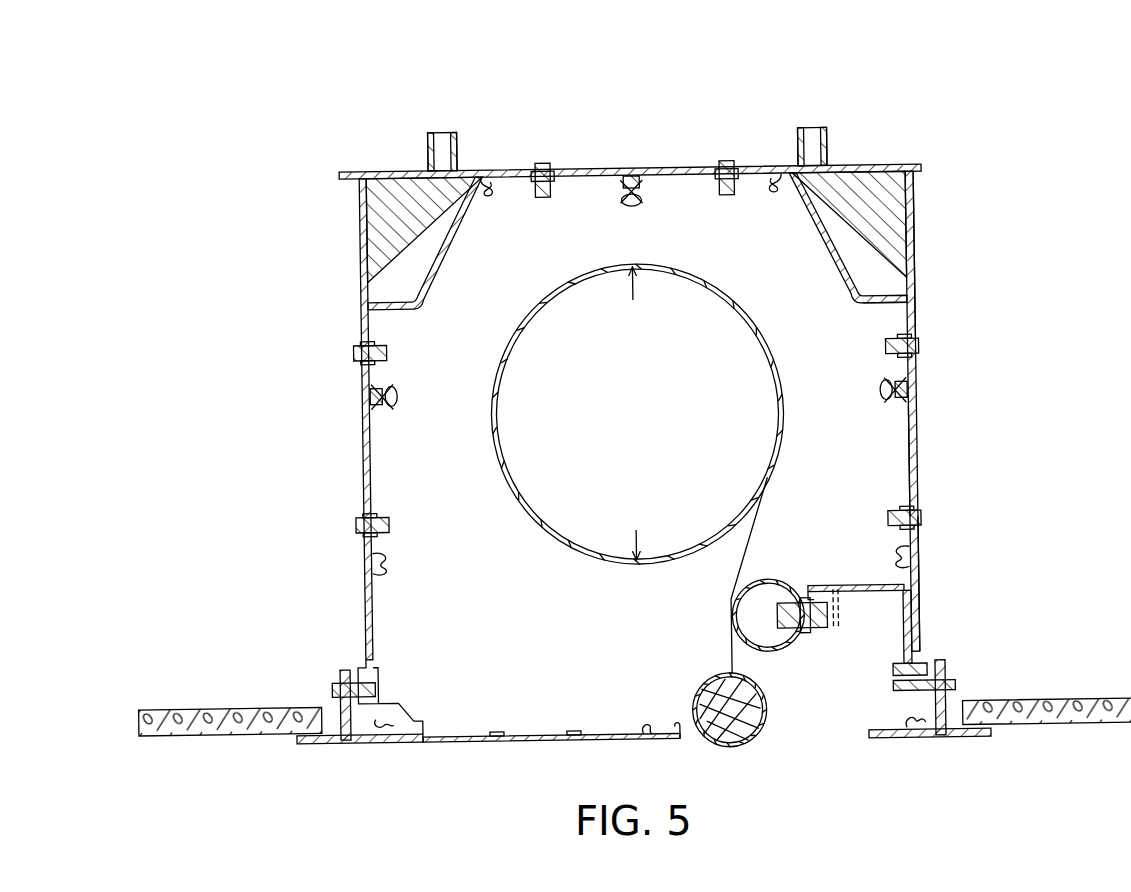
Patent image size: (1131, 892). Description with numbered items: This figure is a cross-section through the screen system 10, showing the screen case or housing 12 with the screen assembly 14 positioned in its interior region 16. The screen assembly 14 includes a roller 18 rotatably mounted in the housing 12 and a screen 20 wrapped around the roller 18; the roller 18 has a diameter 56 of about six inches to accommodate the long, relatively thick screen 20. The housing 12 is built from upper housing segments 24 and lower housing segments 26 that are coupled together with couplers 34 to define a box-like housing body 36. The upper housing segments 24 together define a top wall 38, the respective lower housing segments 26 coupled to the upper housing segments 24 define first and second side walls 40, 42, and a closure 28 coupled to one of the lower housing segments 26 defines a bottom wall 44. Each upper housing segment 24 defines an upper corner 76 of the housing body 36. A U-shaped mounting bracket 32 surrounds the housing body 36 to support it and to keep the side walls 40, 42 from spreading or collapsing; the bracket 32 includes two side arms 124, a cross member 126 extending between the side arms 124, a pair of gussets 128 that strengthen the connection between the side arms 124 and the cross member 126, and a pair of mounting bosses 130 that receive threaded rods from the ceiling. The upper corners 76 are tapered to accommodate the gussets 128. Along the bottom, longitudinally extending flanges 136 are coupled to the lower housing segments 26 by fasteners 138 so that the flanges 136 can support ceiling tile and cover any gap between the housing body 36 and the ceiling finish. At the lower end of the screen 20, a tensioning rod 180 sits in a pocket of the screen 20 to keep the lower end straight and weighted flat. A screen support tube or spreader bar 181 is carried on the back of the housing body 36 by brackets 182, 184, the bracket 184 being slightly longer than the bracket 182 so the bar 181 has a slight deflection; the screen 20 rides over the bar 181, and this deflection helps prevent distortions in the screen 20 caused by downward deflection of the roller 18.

The screen system 10 is at (1043, 125).
The screen case or housing 12 is at (929, 536).
The screen assembly 14 is at (499, 593).
The interior region 16 is at (885, 465).
The roller 18 is at (527, 498).
The screen 20 is at (751, 542).
The upper housing segment 24 is at (829, 260).
The lower housing segment 26 is at (378, 467).
The closure 28 is at (511, 733).
The U-shaped mounting bracket 32 is at (923, 241).
The coupler 34 is at (632, 175).
The housing body 36 is at (906, 286).
The top wall 38 is at (578, 179).
The first side wall 40 is at (371, 594).
The second side wall 42 is at (918, 476).
The bottom wall 44 is at (596, 734).
The diameter 56 is at (637, 413).
The corner 76 is at (834, 237).
The side arm 124 is at (364, 452).
The cross member 126 is at (676, 168).
The gusset 128 is at (380, 209).
The mounting boss 130 is at (470, 116).
The longitudinally extending flange 136 is at (319, 693).
The fastener 138 is at (333, 679).
The tensioning rod 180 is at (697, 690).
The screen support tube or spreader bar 181 is at (795, 578).
The bracket 182 is at (835, 621).
The bracket 184 is at (850, 590).